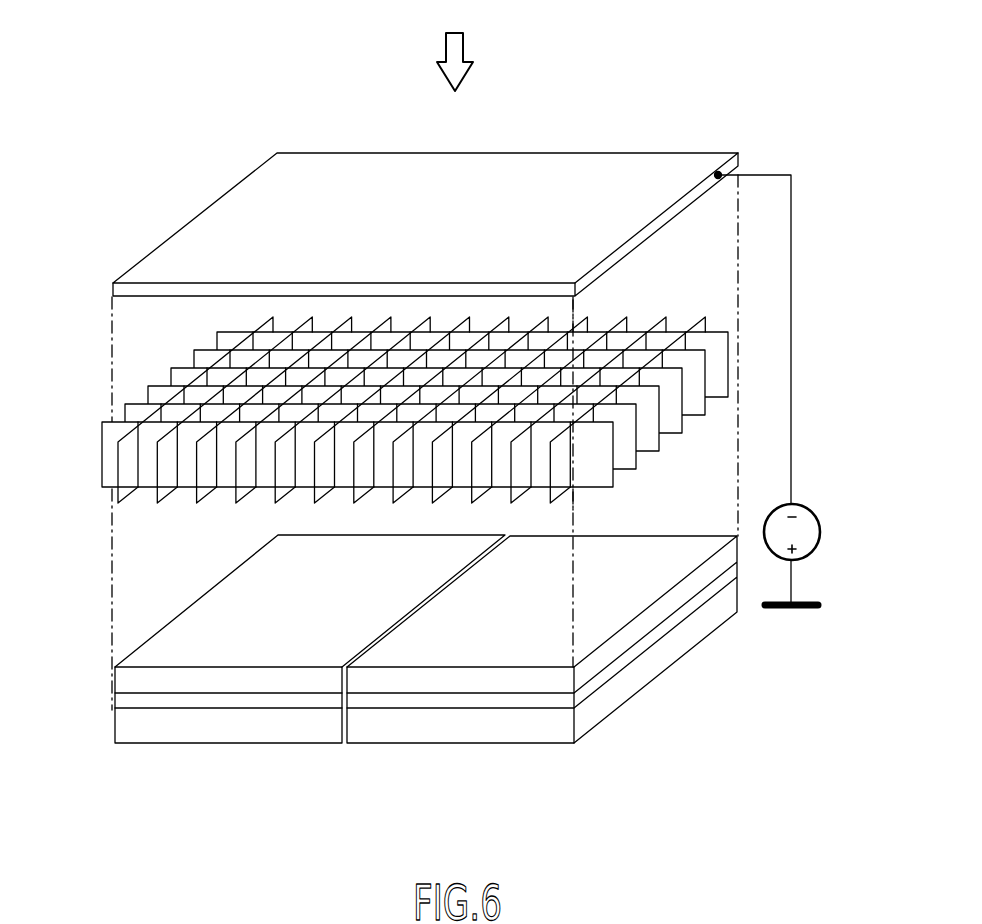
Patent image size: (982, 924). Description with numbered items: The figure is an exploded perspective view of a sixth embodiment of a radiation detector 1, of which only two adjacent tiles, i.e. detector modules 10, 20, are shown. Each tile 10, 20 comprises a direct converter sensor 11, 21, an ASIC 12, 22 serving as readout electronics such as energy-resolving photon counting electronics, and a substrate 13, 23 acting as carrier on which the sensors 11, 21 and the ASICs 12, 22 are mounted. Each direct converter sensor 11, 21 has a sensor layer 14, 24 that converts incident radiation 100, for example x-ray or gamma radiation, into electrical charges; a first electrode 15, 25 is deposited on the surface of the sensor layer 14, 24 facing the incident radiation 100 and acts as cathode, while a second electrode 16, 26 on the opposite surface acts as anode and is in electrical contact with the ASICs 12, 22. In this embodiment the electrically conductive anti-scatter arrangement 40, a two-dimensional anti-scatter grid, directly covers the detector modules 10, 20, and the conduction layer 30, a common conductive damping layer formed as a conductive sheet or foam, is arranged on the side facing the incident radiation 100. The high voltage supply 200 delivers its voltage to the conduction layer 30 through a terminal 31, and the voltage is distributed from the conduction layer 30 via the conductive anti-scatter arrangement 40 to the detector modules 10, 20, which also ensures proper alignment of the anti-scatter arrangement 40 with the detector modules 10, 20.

The radiation detector 1 is at (402, 644).
The tile 10 is at (283, 677).
The direct converter sensor 11 is at (179, 583).
The ASIC 12 is at (135, 700).
The substrate 13 is at (143, 730).
The sensor layer 14 is at (135, 680).
The first electrode 15 is at (239, 594).
The second electrode 16 is at (185, 708).
The tile 20 is at (545, 644).
The direct converter sensor 21 is at (674, 511).
The ASIC 22 is at (633, 653).
The substrate 23 is at (540, 730).
The sensor layer 24 is at (667, 607).
The first electrode 25 is at (608, 551).
The second electrode 26 is at (495, 708).
The conduction layer 30 is at (160, 246).
The terminal 31 is at (722, 173).
The anti-scatter arrangement 40 is at (147, 387).
The incident radiation 100 is at (463, 42).
The high voltage supply 200 is at (821, 547).